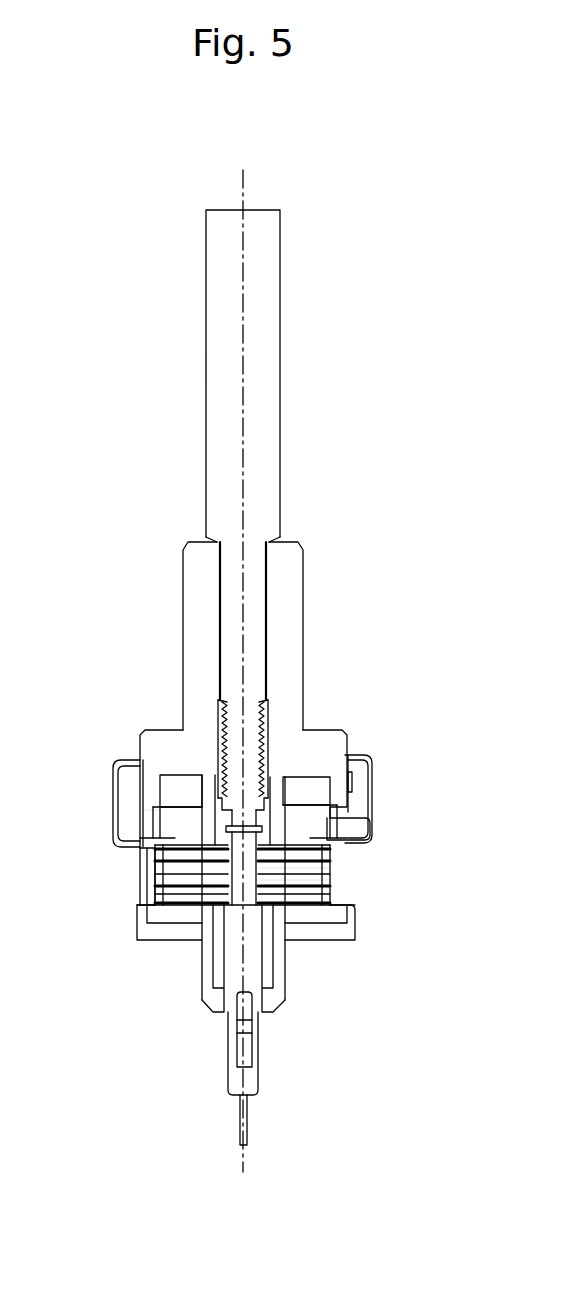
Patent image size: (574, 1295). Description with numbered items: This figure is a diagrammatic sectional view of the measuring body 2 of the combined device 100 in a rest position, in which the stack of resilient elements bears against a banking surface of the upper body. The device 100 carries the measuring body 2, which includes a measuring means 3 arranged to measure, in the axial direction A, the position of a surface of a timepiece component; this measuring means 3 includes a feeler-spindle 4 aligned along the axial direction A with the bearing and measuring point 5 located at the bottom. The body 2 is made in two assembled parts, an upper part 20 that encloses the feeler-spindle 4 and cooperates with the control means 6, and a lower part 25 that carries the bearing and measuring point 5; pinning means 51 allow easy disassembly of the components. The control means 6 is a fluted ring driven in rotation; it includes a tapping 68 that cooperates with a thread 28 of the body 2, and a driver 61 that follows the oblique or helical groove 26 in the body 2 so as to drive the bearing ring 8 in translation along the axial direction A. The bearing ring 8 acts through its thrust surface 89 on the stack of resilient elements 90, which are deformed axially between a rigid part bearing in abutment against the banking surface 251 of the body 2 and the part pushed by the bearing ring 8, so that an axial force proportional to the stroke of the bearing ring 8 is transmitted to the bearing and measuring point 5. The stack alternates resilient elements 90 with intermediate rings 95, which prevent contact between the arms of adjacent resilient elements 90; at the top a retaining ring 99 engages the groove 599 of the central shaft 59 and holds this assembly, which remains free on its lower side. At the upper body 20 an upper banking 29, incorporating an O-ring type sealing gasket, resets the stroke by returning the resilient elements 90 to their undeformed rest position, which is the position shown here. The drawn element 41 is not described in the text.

The device 100 is at (103, 515).
The measuring means 3 is at (318, 290).
The feeler-spindle 4 is at (255, 370).
The axial direction A is at (252, 404).
The upper part 20 is at (290, 588).
The measuring body 2 is at (352, 714).
The retaining ring 99 is at (258, 830).
The pinning means 51 is at (246, 830).
The groove 599 is at (236, 826).
The tapping 68 is at (146, 789).
The thread 28 is at (355, 781).
The bearing ring 8 is at (158, 820).
The control means 6 is at (350, 800).
The driver 61 is at (342, 832).
The groove 26 is at (124, 858).
The central shaft 59 is at (302, 858).
The intermediate ring 95 is at (302, 880).
The thrust surface 89 is at (160, 853).
The lower part 25 is at (345, 930).
The banking surface 251 is at (200, 895).
The resilient element 90 is at (298, 888).
The upper banking 29 is at (214, 852).
The pin 41 is at (247, 850).
The bearing and measuring point 5 is at (257, 1085).